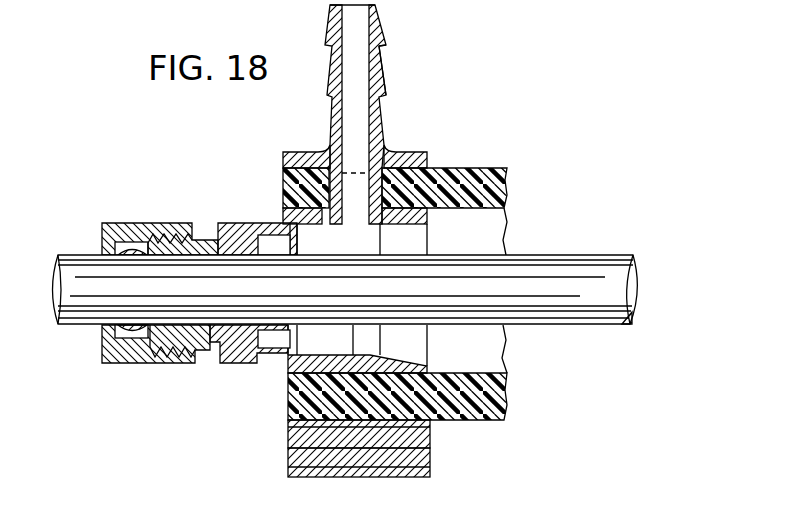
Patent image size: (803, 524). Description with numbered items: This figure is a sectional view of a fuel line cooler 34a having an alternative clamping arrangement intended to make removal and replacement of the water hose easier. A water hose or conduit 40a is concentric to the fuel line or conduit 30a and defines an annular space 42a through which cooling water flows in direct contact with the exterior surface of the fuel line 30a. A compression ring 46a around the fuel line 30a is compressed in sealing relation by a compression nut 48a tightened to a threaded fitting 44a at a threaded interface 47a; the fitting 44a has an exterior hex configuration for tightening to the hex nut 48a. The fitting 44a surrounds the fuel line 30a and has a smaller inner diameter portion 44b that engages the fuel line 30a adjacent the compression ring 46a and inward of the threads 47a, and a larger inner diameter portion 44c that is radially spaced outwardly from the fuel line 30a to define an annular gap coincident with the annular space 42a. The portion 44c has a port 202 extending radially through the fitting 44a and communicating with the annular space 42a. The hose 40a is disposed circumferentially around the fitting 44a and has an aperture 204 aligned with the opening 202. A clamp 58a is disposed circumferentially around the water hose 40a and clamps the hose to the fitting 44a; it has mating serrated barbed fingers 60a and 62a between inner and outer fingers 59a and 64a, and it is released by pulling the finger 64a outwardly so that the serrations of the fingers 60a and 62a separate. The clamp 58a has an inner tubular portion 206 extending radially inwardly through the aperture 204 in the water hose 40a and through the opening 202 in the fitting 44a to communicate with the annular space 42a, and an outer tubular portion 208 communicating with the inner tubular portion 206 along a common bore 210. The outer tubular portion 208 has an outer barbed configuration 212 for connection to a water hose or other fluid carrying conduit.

The fuel line 30a is at (587, 254).
The fuel line cooler 34a is at (502, 147).
The water hose 40a is at (460, 168).
The annular space 42a is at (490, 223).
The threaded fitting 44a is at (227, 357).
The smaller inner diameter portion 44b is at (195, 315).
The larger inner diameter portion 44c is at (356, 326).
The compression ring 46a is at (128, 335).
The threaded interface 47a is at (170, 232).
The compression nut 48a is at (117, 353).
The clamp 58a is at (283, 163).
The inner finger 59a is at (427, 422).
The serrated barbed finger 60a is at (288, 433).
The serrated barbed finger 62a is at (420, 453).
The outer finger 64a is at (300, 483).
The port 202 is at (350, 226).
The aperture 204 is at (345, 182).
The inner tubular portion 206 is at (378, 237).
The outer tubular portion 208 is at (381, 78).
The common bore 210 is at (376, 38).
The barbed configuration 212 is at (381, 53).